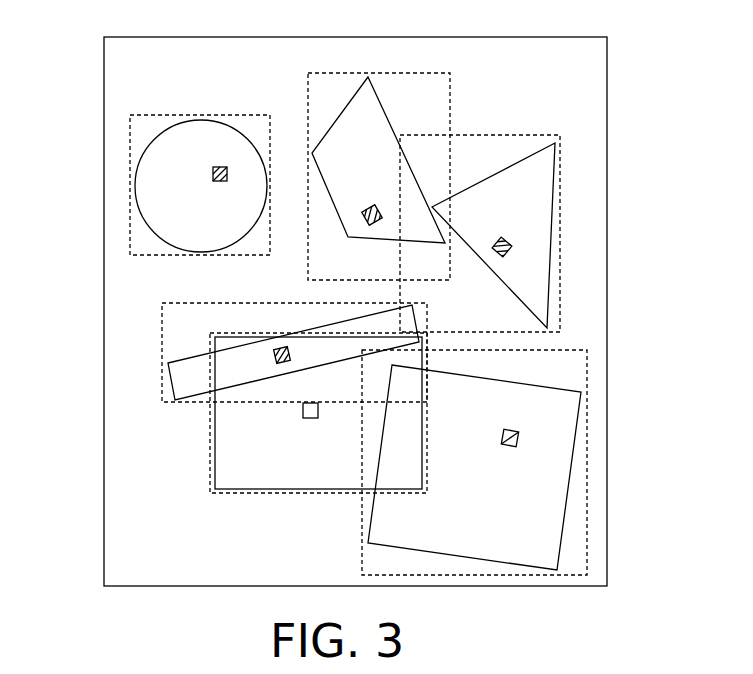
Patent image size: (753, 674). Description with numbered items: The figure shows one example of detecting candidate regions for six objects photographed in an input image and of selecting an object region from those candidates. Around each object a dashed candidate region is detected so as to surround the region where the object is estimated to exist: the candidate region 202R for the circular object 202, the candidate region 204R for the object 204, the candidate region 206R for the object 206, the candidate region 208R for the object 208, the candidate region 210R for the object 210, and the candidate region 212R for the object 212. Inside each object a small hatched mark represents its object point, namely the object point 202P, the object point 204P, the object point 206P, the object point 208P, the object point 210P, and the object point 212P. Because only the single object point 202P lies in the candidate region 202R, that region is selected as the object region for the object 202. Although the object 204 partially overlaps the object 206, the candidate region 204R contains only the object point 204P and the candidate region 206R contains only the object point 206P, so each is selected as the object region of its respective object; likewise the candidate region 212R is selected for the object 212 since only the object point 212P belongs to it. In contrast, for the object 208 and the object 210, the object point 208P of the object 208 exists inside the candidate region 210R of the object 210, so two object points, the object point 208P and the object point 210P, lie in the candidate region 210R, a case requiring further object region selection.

The object 202 is at (146, 151).
The candidate region 202R is at (233, 114).
The object point 202P is at (220, 183).
The object 204 is at (378, 160).
The candidate region 204R is at (323, 72).
The object point 204P is at (368, 206).
The object 206 is at (504, 165).
The candidate region 206R is at (560, 184).
The object point 206P is at (498, 239).
The object 208 is at (170, 394).
The candidate region 208R is at (160, 402).
The object point 208P is at (282, 364).
The object 210 is at (240, 490).
The candidate region 210R is at (299, 495).
The object point 210P is at (308, 419).
The object 212 is at (563, 388).
The candidate region 212R is at (588, 420).
The object point 212P is at (510, 447).